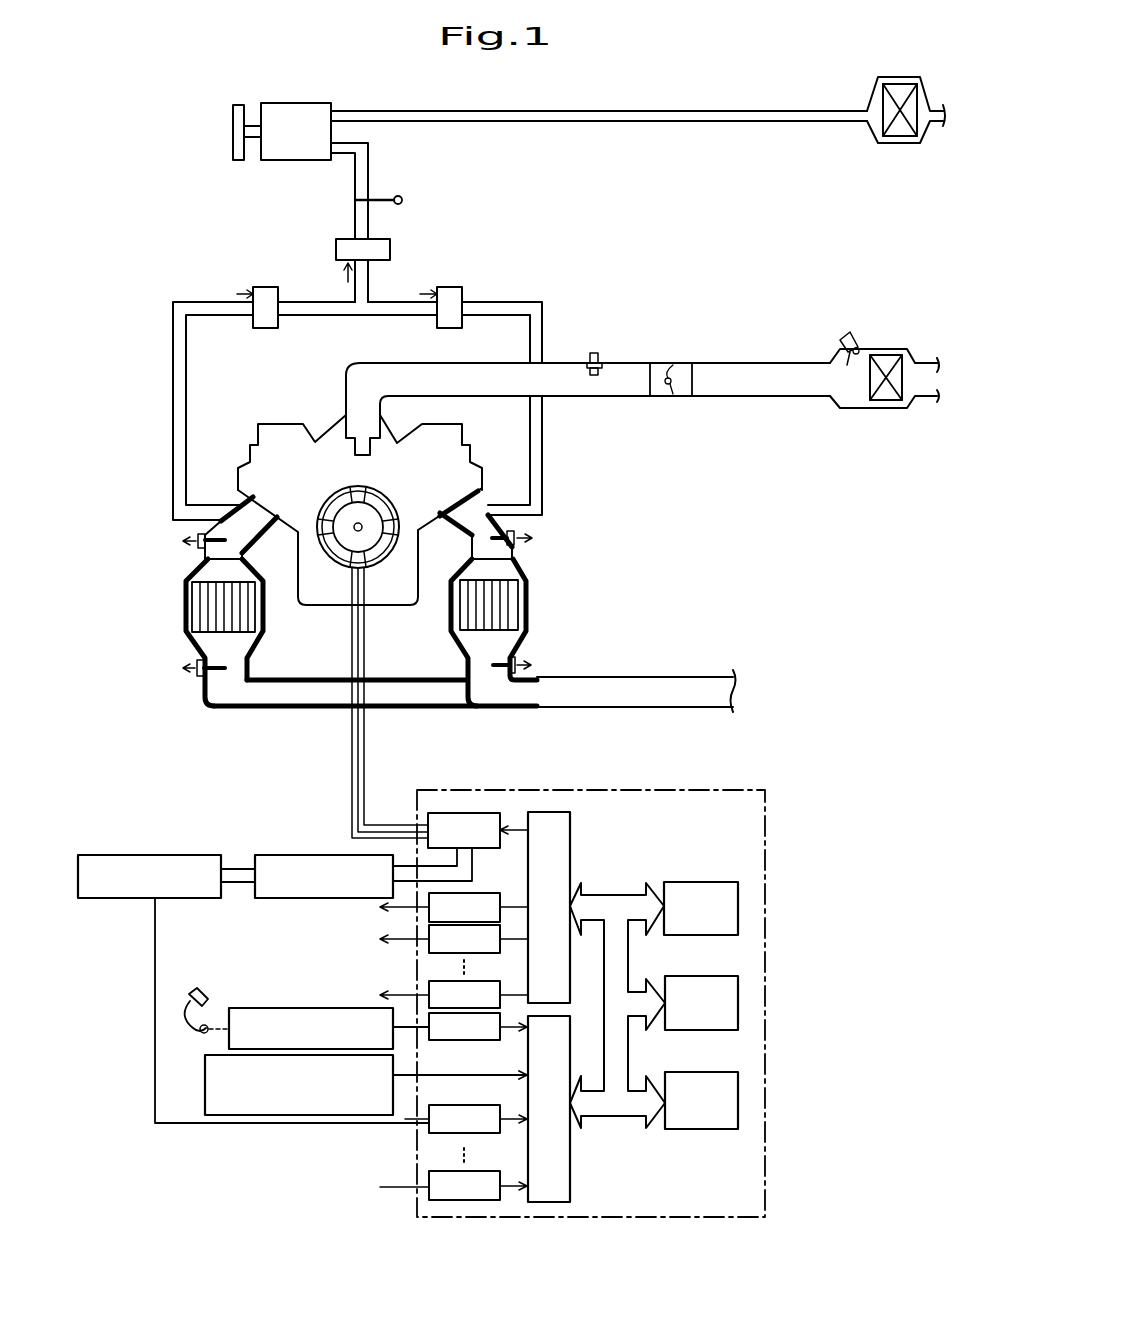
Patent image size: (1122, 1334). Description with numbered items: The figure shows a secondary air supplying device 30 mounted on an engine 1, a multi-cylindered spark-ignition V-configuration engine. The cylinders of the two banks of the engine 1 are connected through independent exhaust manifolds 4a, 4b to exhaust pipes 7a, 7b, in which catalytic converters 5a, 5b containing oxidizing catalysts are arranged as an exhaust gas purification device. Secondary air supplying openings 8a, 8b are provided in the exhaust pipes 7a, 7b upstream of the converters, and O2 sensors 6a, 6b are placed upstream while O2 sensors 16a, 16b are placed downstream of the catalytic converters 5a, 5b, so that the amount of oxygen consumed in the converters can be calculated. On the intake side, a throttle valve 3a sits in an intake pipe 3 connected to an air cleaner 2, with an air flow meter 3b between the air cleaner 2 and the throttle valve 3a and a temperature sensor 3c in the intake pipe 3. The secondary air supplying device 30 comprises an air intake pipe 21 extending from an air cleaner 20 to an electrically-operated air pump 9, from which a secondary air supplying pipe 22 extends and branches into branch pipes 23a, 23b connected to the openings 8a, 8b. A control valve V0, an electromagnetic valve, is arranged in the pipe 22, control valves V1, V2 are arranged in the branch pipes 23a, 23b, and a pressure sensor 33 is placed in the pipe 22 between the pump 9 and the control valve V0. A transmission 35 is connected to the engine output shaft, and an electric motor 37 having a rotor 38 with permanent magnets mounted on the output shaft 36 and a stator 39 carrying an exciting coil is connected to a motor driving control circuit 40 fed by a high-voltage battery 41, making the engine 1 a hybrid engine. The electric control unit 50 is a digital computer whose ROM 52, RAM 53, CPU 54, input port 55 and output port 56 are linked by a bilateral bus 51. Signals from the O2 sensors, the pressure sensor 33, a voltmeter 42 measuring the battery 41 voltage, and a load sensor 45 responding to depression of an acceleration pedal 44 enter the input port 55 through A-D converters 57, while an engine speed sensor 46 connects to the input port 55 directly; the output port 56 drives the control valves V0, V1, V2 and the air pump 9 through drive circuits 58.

The engine 1 is at (268, 417).
The air cleaner 2 is at (893, 354).
The intake pipe 3 is at (750, 389).
The throttle valve 3a is at (673, 364).
The air flow meter 3b is at (846, 334).
The temperature sensor 3c is at (598, 352).
The exhaust manifold 4a is at (279, 522).
The exhaust manifold 4b is at (453, 517).
The catalytic converter 5a is at (184, 607).
The catalytic converter 5b is at (533, 608).
The O2 sensor 6a is at (193, 546).
The O2 sensor 6b is at (517, 552).
The exhaust pipe 7a is at (432, 708).
The exhaust pipe 7b is at (661, 700).
The secondary air supplying opening 8a is at (232, 513).
The secondary air supplying opening 8b is at (485, 512).
The electrically-operated air pump 9 is at (231, 147).
The O2 sensor 16a is at (193, 680).
The O2 sensor 16b is at (520, 660).
The air cleaner 20 is at (884, 92).
The air intake pipe 21 is at (657, 112).
The secondary air supplying pipe 22 is at (370, 153).
The branch pipe 23a is at (173, 437).
The branch pipe 23b is at (544, 440).
The secondary air supplying device 30 is at (278, 102).
The pressure sensor 33 is at (383, 192).
The transmission 35 is at (377, 500).
The output shaft 36 is at (361, 526).
The electric motor 37 is at (403, 568).
The rotor 38 is at (318, 530).
The stator 39 is at (353, 486).
The motor driving control circuit 40 is at (486, 849).
The battery 41 is at (298, 854).
The voltmeter 42 is at (180, 854).
The acceleration pedal 44 is at (183, 1010).
The load sensor 45 is at (285, 1007).
The engine speed sensor 46 is at (205, 1074).
The electric control unit 50 is at (767, 846).
The bilateral bus 51 is at (622, 894).
The ROM 52 is at (697, 881).
The RAM 53 is at (697, 975).
The CPU 54 is at (699, 1071).
The input port 55 is at (571, 1160).
The output port 56 is at (571, 820).
The A-D converter 57 is at (482, 1042).
The drive circuit 58 is at (378, 938).
The control valve V0 is at (335, 250).
The control valve V1 is at (261, 330).
The control valve V2 is at (452, 323).